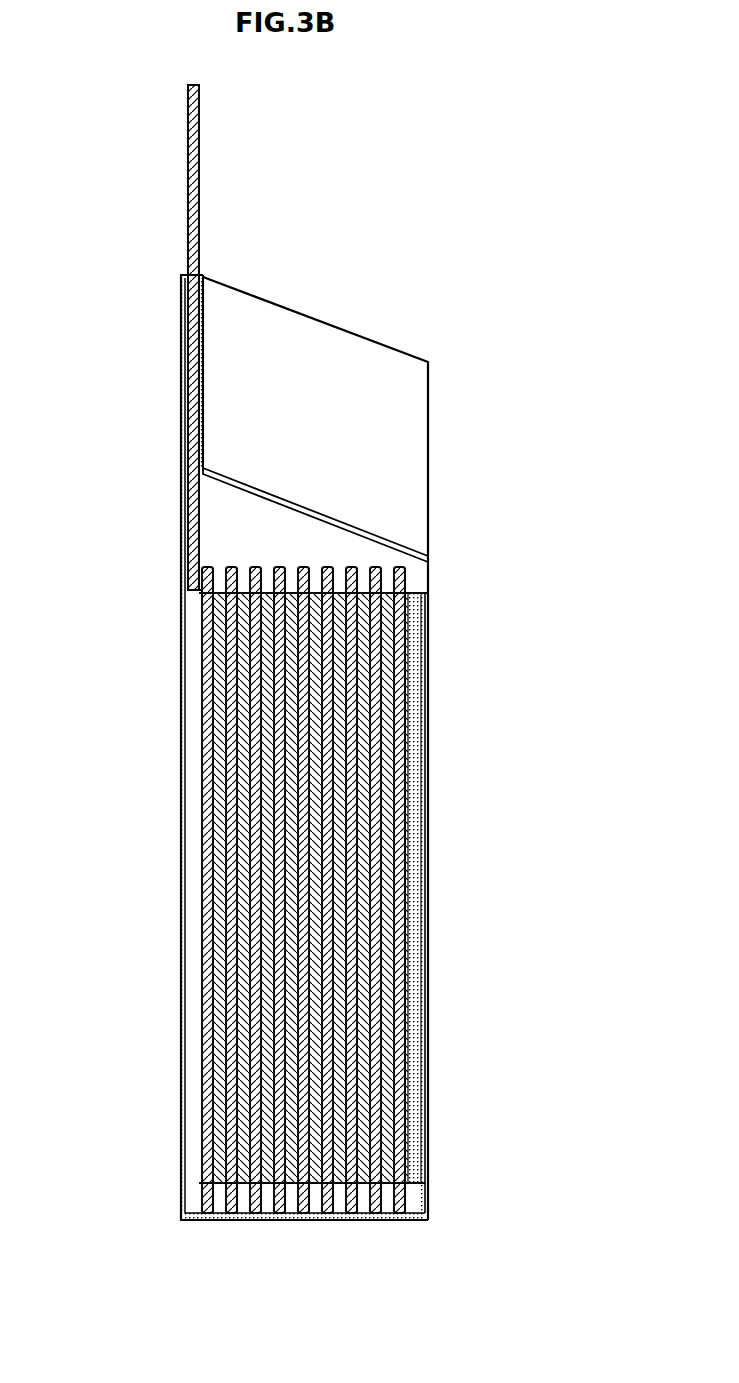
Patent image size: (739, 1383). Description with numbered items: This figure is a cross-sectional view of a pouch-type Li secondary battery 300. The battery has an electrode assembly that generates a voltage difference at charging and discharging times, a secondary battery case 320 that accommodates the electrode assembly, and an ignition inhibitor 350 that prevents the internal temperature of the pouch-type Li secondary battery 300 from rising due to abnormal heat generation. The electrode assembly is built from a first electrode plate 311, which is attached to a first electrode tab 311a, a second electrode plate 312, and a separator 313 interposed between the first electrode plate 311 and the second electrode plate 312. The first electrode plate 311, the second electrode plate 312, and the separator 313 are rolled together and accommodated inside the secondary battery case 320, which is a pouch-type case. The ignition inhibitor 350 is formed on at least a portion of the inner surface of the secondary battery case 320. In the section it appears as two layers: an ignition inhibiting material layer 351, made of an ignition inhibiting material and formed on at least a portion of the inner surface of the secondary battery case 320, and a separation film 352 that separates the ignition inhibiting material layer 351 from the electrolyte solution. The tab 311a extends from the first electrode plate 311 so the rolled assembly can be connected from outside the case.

The pouch-type Li secondary battery 300 is at (430, 185).
The first electrode plate 311 is at (180, 1215).
The first electrode tab 311a is at (188, 155).
The second electrode plate 312 is at (240, 1222).
The separator 313 is at (205, 1222).
The secondary battery case 320 is at (428, 602).
The ignition inhibitor 350 is at (559, 811).
The ignition inhibiting material layer 351 is at (425, 813).
The separation film 352 is at (412, 862).